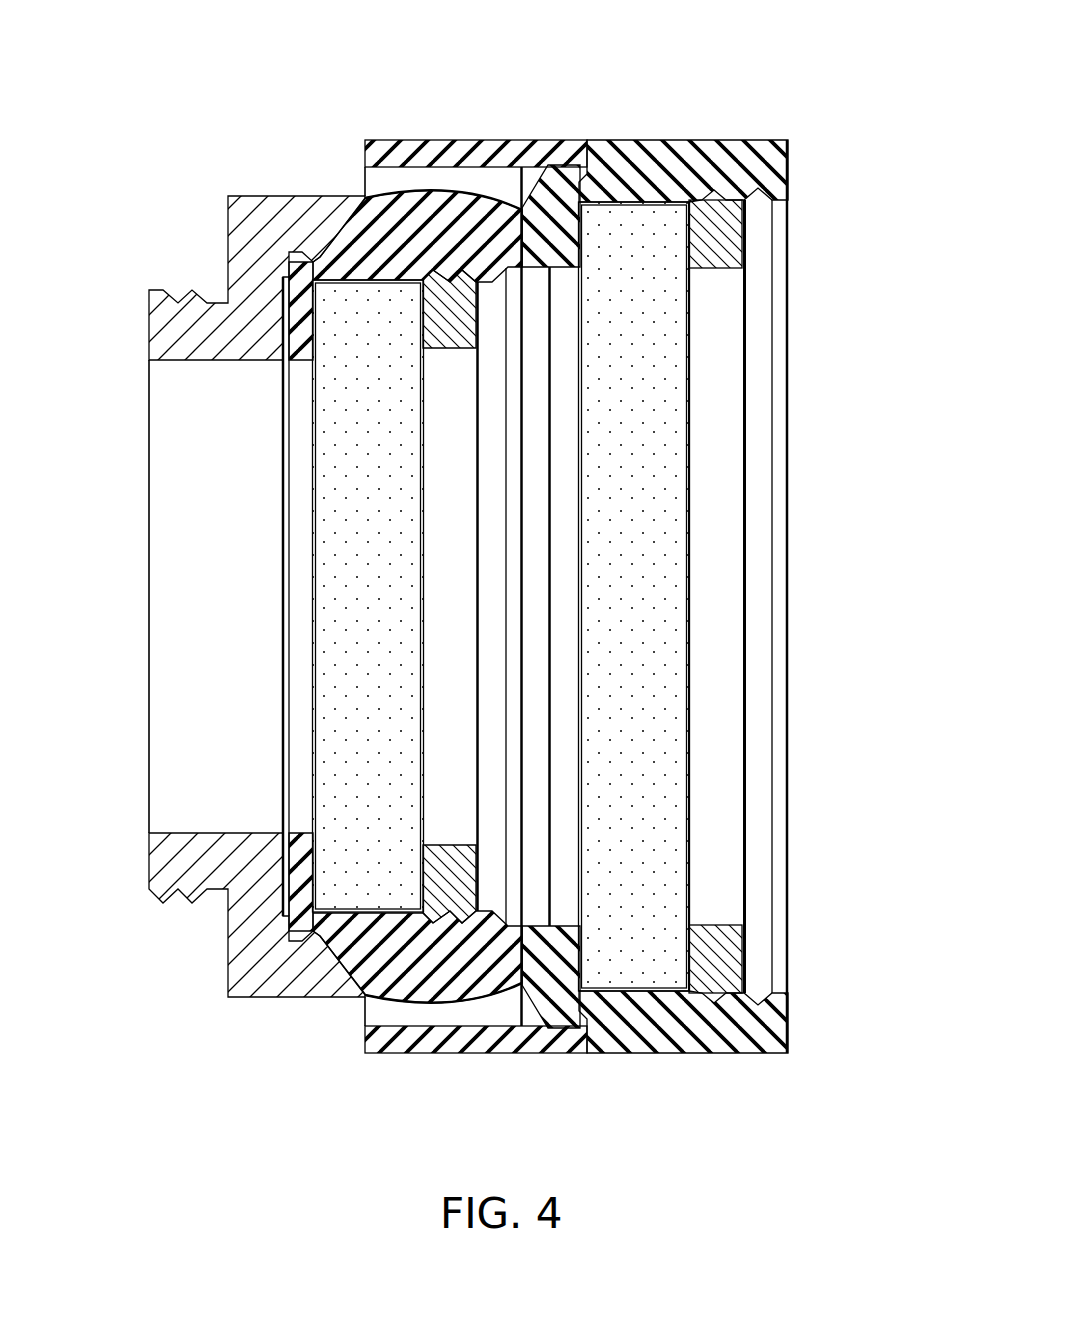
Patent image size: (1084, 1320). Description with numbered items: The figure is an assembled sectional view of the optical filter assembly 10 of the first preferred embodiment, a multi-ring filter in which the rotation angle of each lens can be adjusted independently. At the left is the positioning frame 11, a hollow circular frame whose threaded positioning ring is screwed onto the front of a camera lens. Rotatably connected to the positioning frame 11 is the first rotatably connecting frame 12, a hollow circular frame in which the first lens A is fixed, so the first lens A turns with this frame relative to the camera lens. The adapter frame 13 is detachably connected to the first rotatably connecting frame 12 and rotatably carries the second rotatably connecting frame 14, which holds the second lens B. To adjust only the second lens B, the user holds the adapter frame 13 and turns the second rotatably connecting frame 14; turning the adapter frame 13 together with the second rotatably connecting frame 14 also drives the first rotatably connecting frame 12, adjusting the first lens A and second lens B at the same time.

The optical filter assembly 10 is at (826, 77).
The positioning frame 11 is at (254, 212).
The first rotatably connecting frame 12 is at (427, 220).
The adapter frame 13 is at (537, 150).
The second rotatably connecting frame 14 is at (706, 160).
The first lens A is at (350, 557).
The second lens B is at (650, 375).